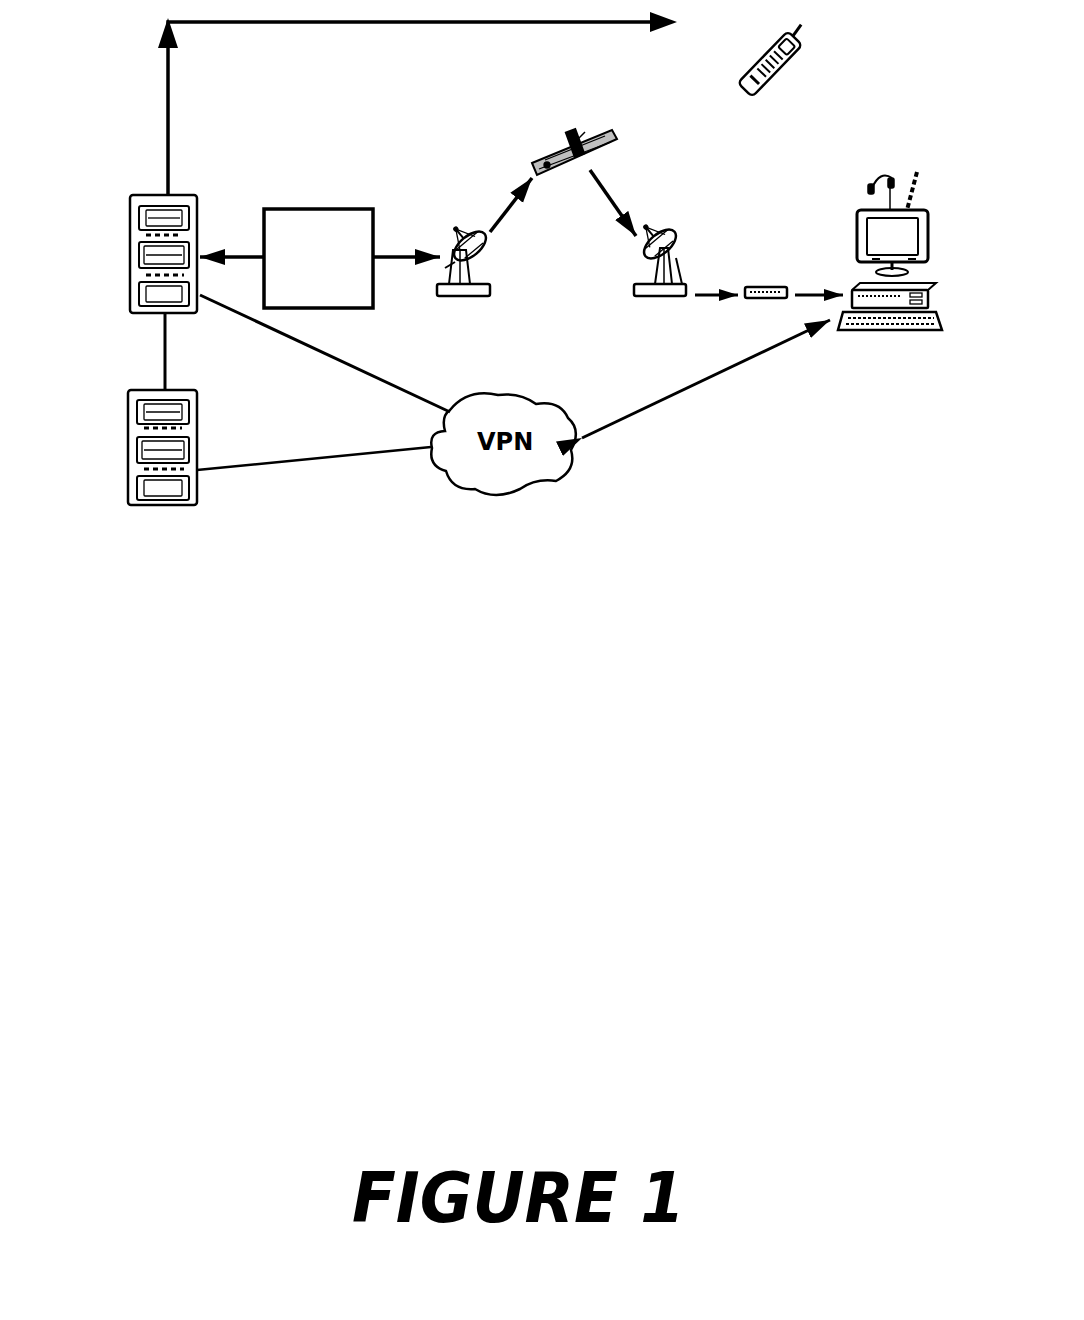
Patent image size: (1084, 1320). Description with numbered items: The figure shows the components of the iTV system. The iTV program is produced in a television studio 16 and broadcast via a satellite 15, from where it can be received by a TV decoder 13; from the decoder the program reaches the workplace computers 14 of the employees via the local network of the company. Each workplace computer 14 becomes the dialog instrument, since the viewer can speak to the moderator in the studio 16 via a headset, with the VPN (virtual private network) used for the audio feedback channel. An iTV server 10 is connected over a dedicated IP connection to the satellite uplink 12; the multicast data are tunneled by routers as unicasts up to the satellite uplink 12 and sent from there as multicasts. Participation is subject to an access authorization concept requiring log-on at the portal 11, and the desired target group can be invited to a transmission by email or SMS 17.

The iTV server 10 is at (138, 240).
The portal 11 is at (140, 430).
The satellite uplink 12 is at (465, 290).
The TV decoder 13 is at (766, 292).
The workplace computer 14 is at (880, 326).
The satellite 15 is at (537, 152).
The television studio 16 is at (330, 220).
The SMS 17 is at (790, 71).